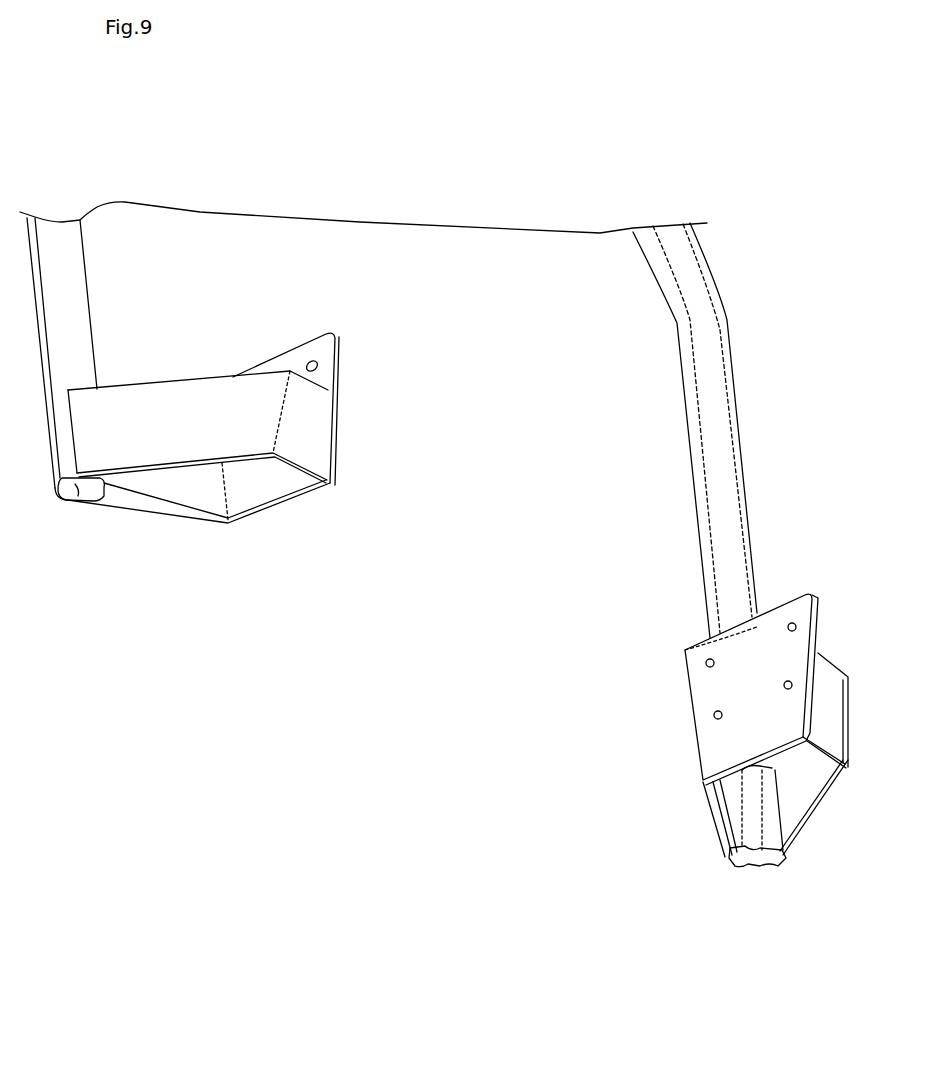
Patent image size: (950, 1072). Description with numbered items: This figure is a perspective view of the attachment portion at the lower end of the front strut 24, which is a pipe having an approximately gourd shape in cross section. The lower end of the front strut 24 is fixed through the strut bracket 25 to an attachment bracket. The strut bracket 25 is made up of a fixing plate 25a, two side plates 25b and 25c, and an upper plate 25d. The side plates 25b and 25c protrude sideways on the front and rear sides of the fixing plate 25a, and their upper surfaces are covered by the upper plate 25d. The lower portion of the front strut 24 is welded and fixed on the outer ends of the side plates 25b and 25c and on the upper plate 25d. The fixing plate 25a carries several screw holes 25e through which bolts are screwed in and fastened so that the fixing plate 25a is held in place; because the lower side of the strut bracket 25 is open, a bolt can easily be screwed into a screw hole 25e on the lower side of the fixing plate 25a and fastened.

The front strut 24 is at (80, 254).
The strut bracket 25 is at (729, 649).
The fixing plate 25a is at (328, 347).
The side plate 25b is at (178, 398).
The side plate 25c is at (192, 500).
The upper plate 25d is at (782, 763).
The screw hole 25e is at (788, 629).